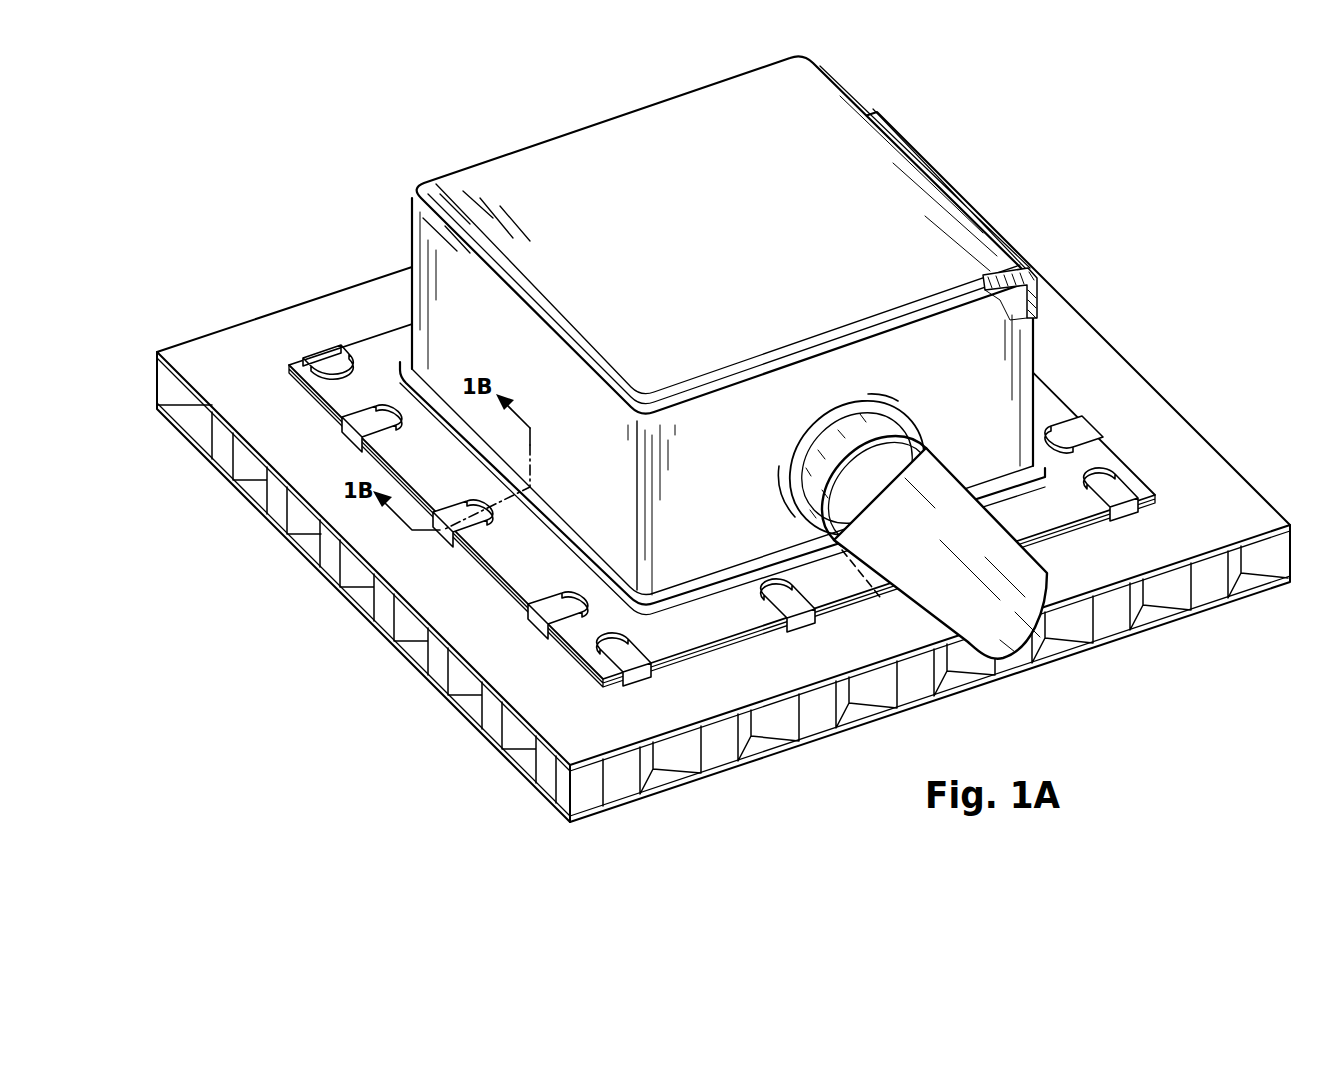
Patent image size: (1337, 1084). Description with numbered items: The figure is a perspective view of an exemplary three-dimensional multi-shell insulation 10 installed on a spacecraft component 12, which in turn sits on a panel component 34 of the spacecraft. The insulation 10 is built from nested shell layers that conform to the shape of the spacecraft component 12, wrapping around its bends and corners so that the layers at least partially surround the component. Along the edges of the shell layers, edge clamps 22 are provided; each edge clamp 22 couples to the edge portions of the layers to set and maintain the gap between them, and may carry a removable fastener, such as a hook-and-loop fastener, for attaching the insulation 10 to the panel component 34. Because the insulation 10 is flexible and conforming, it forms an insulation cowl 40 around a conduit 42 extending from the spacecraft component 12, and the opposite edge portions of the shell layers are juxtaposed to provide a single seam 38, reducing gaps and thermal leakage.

The three-dimensional multi-shell insulation 10 is at (466, 135).
The spacecraft component 12 is at (1040, 288).
The edge clamp 22 is at (1120, 492).
The panel component 34 is at (1225, 495).
The seam 38 is at (856, 553).
The insulation cowl 40 is at (838, 447).
The conduit 42 is at (987, 605).